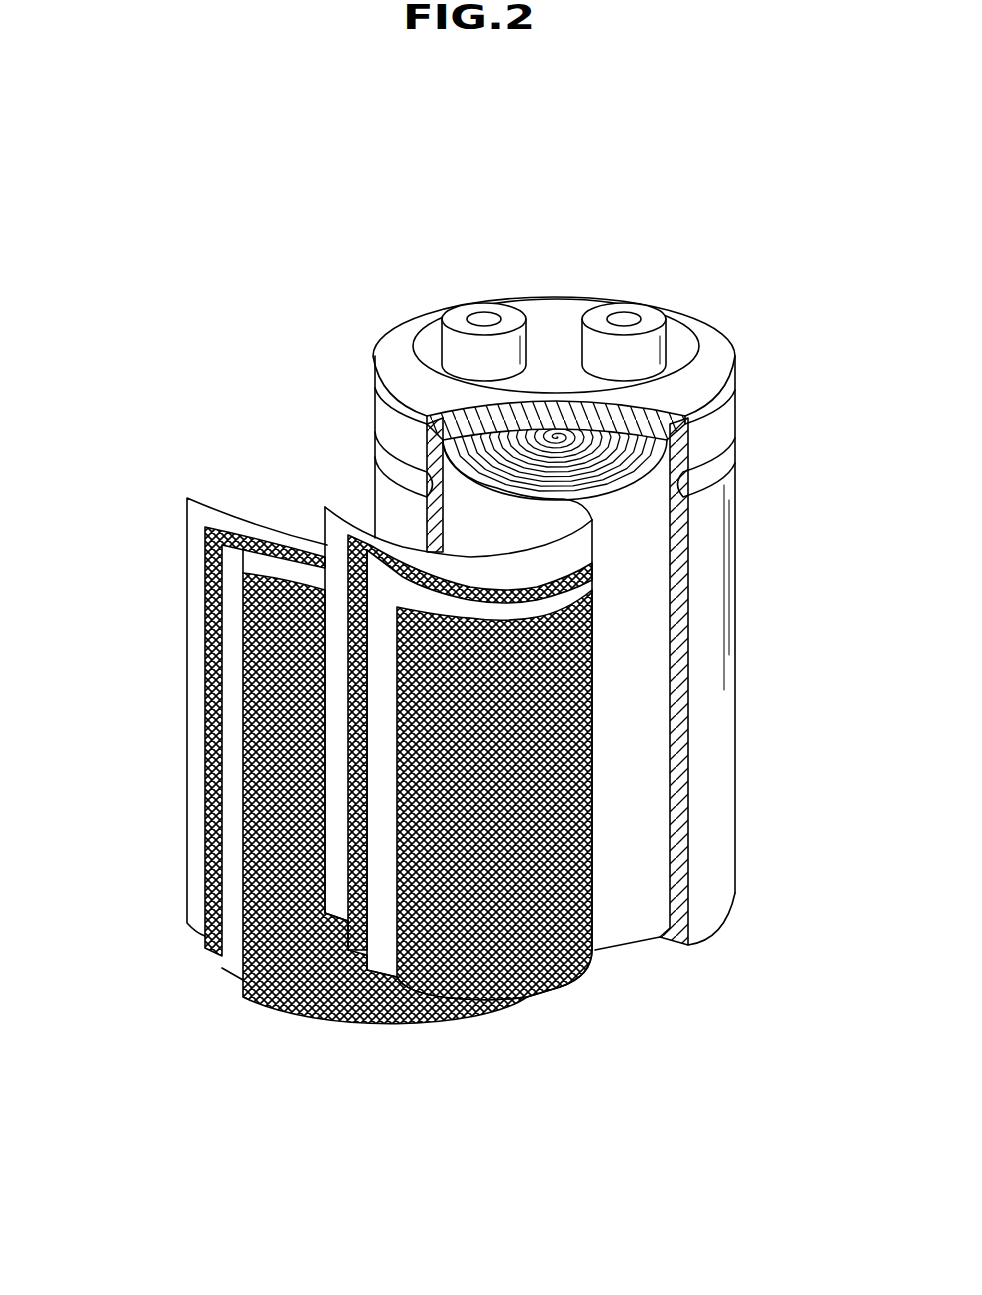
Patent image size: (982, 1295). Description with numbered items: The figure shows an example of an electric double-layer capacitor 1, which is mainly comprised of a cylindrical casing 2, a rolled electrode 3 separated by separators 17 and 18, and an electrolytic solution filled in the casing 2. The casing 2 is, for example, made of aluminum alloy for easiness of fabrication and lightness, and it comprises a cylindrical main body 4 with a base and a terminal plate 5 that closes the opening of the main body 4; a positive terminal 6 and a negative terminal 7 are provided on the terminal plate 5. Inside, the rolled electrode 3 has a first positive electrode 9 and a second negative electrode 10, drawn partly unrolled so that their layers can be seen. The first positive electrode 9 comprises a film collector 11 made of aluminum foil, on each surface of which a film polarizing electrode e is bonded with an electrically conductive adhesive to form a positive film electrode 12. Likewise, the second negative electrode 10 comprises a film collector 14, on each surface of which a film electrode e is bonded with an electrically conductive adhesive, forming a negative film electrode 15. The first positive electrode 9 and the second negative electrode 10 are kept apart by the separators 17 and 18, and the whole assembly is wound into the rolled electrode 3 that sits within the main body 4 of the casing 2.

The electric double-layer capacitor 1 is at (710, 296).
The cylindrical casing 2 is at (738, 682).
The rolled electrode 3 is at (640, 762).
The cylindrical main body 4 is at (703, 605).
The terminal plate 5 is at (430, 358).
The positive terminal 6 is at (460, 313).
The negative terminal 7 is at (597, 317).
The first positive electrode 9 is at (201, 779).
The second negative electrode 10 is at (596, 910).
The film collector 11 is at (233, 913).
The positive film electrode 12 is at (445, 1080).
The film collector 14 is at (390, 884).
The negative film electrode 15 is at (465, 1104).
The separator 17 is at (195, 538).
The separator 18 is at (338, 532).
The film polarizing electrode e is at (388, 840).